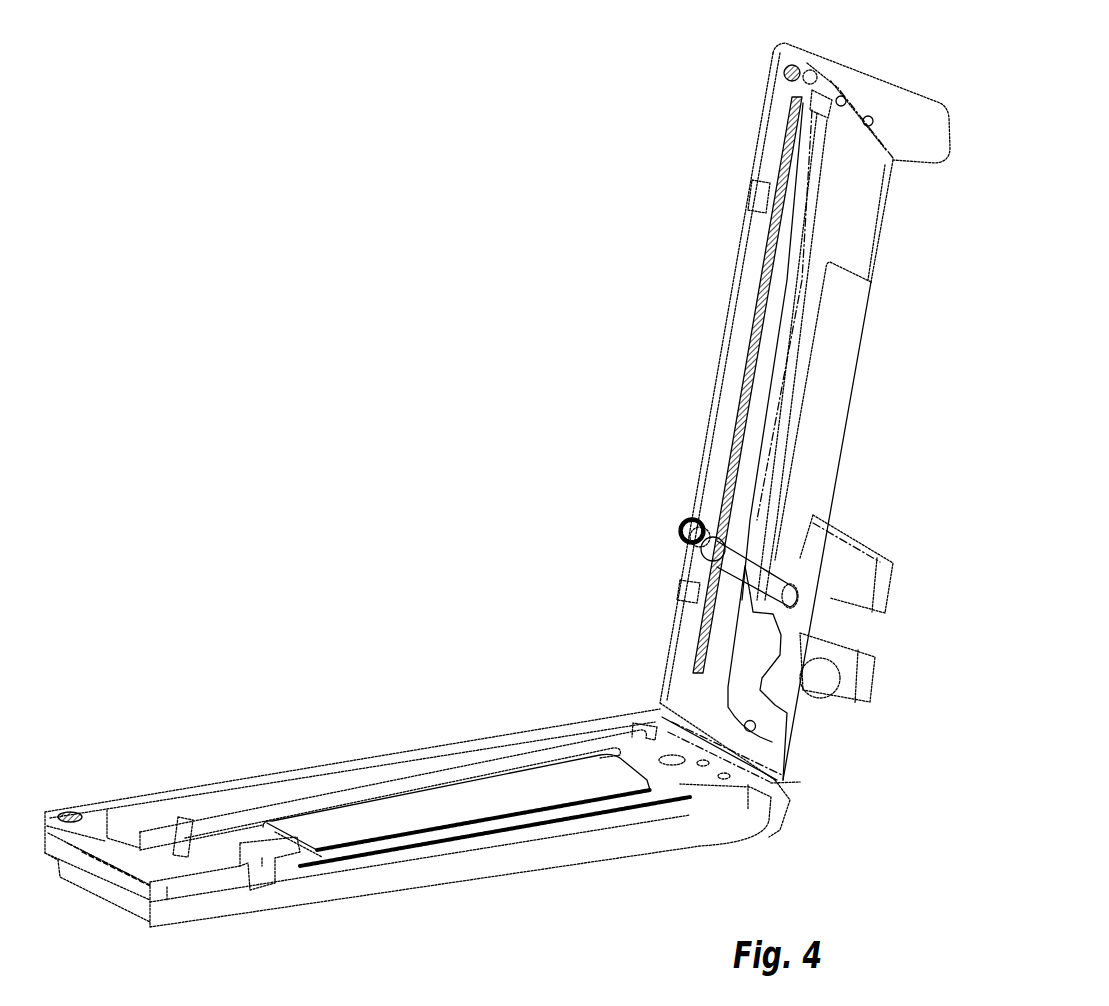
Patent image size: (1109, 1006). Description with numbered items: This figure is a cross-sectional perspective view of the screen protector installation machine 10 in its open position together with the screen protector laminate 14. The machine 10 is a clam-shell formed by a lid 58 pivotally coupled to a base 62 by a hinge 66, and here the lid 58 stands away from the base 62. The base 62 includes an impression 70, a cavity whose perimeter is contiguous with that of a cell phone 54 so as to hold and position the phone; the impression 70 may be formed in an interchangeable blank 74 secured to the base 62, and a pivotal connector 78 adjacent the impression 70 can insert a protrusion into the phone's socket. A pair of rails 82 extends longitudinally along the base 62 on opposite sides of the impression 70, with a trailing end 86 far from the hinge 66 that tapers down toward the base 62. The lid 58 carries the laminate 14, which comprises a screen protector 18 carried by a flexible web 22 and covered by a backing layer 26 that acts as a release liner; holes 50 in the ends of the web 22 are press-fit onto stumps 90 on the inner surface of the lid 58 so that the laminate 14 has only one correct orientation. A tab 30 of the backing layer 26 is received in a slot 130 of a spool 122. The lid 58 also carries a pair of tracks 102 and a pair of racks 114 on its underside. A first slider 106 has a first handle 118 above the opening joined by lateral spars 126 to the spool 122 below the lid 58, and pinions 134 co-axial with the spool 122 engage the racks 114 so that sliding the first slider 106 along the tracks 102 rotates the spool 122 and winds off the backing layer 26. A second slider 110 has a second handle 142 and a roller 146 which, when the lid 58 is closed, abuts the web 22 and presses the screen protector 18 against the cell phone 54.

The screen protector installation machine 10 is at (767, 850).
The screen protector laminate 14 is at (877, 200).
The screen protector 18 is at (863, 330).
The web 22 is at (860, 234).
The backing layer 26 is at (830, 383).
The tab 30 is at (783, 707).
The holes 50 is at (872, 117).
The cell phone 54 is at (553, 793).
The lid 58 is at (678, 617).
The base 62 is at (463, 744).
The hinge 66 is at (772, 777).
The impression 70 is at (400, 853).
The blank 74 is at (685, 807).
The pivotal connector 78 is at (290, 862).
The rails 82 is at (393, 780).
The trailing end 86 is at (192, 815).
The stumps 90 is at (840, 98).
The tracks 102 is at (815, 222).
The first slider 106 is at (888, 563).
The second slider 110 is at (875, 657).
The racks 114 is at (788, 155).
The first handle 118 is at (882, 587).
The spool 122 is at (733, 547).
The lateral spars 126 is at (745, 517).
The slot 130 is at (795, 592).
The pinions 134 is at (682, 528).
The second handle 142 is at (873, 700).
The roller 146 is at (820, 680).